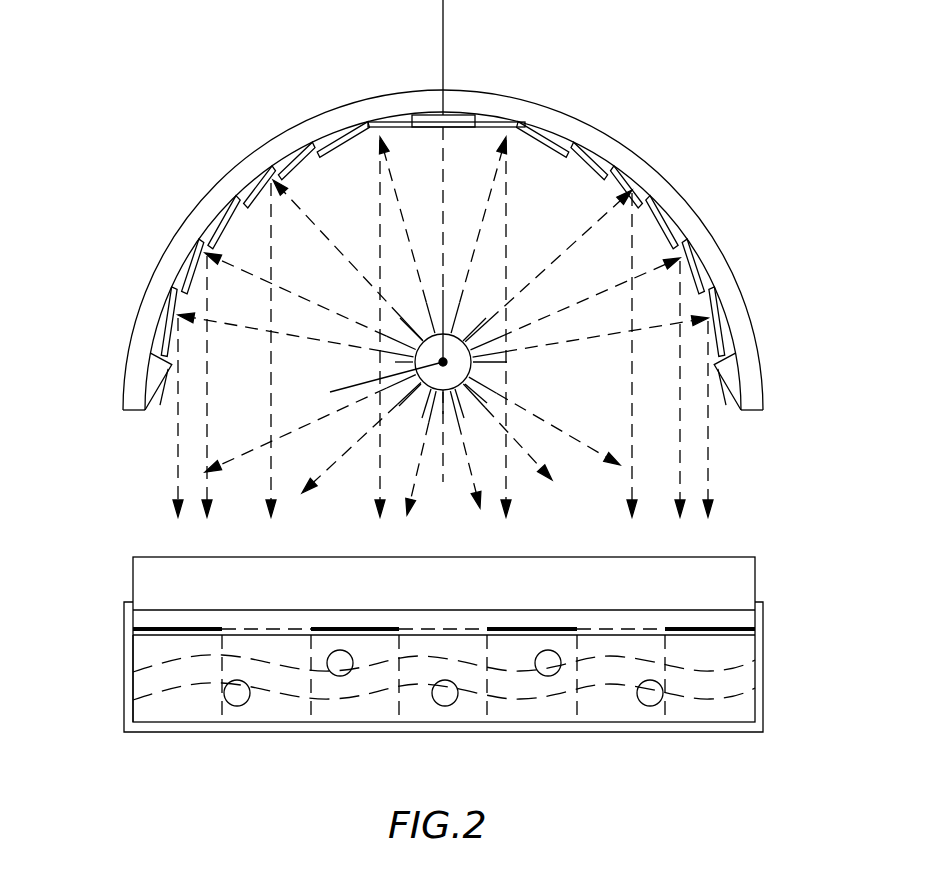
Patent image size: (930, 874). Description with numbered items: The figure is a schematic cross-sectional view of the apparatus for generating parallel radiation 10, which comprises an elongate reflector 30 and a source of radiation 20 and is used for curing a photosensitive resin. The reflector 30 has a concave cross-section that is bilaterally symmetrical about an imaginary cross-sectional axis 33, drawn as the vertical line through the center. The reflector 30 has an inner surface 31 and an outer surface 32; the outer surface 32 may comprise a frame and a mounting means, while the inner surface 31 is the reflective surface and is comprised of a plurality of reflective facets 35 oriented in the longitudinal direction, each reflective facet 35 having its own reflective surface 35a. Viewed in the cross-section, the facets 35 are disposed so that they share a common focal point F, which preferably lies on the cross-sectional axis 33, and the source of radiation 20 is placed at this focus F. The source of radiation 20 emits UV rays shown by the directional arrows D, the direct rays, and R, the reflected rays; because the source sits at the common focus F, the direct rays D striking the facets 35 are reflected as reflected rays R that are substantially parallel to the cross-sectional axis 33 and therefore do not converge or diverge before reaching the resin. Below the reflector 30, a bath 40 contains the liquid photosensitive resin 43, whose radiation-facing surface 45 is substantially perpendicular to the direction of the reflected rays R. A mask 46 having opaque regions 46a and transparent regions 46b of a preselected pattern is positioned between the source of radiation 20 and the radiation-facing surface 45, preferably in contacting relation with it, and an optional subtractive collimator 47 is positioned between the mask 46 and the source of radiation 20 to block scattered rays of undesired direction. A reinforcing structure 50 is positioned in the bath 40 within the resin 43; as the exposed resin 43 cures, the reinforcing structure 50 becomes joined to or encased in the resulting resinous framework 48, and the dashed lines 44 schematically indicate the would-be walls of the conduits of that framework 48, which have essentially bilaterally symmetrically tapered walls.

The apparatus for generating parallel radiation 10 is at (199, 104).
The source of radiation 20 is at (466, 376).
The reflector 30 is at (642, 176).
The inner surface 31 is at (455, 128).
The outer surface 32 is at (722, 250).
The cross-sectional axis 33 is at (442, 35).
The reflective facet 35 is at (157, 366).
The reflective surface 35a is at (163, 383).
The bath 40 is at (757, 717).
The liquid photosensitive resin 43 is at (146, 713).
The dashed lines 44 is at (312, 710).
The radiation-facing surface 45 is at (702, 635).
The mask 46 is at (204, 628).
The opaque regions 46a is at (148, 628).
The transparent regions 46b is at (433, 627).
The collimator 47 is at (668, 570).
The resinous framework 48 is at (627, 705).
The reinforcing structure 50 is at (546, 677).
The direct rays D is at (307, 214).
The reflected rays R is at (268, 360).
The common focal point F is at (374, 384).